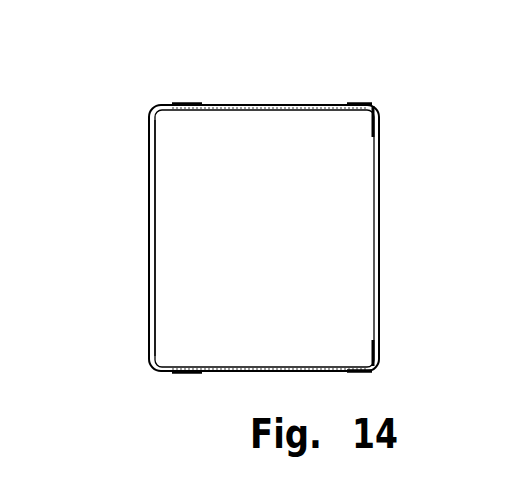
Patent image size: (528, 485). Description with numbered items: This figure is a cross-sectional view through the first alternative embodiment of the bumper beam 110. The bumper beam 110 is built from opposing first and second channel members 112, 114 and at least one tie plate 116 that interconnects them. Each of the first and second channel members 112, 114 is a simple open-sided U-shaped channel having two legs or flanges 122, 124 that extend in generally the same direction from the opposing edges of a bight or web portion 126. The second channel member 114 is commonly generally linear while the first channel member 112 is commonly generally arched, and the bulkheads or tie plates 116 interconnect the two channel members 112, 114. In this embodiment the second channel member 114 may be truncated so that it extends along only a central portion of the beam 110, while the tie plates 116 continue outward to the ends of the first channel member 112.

The bumper beam 110 is at (263, 68).
The first channel member 112 is at (149, 200).
The second channel member 114 is at (380, 178).
The tie plate 116 is at (300, 104).
The leg 122 is at (183, 102).
The leg 124 is at (190, 374).
The web portion 126 is at (380, 222).